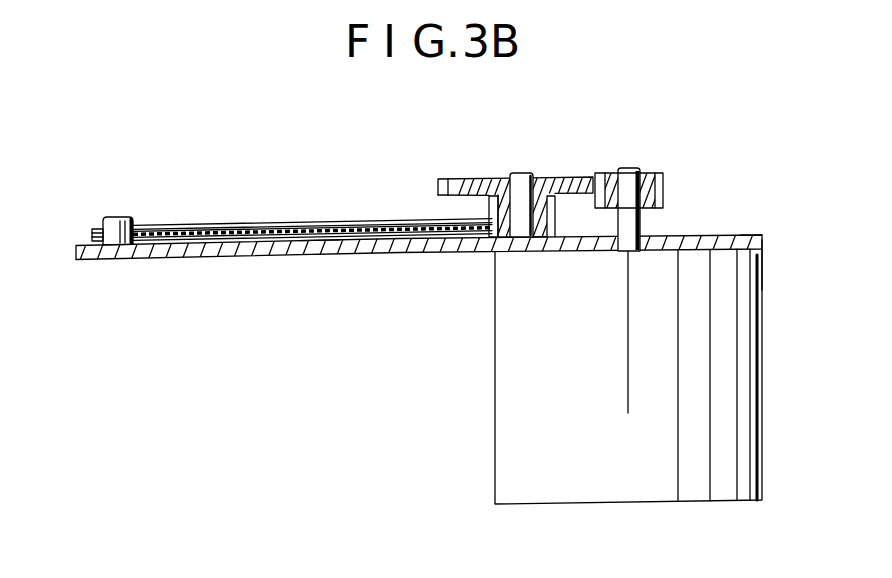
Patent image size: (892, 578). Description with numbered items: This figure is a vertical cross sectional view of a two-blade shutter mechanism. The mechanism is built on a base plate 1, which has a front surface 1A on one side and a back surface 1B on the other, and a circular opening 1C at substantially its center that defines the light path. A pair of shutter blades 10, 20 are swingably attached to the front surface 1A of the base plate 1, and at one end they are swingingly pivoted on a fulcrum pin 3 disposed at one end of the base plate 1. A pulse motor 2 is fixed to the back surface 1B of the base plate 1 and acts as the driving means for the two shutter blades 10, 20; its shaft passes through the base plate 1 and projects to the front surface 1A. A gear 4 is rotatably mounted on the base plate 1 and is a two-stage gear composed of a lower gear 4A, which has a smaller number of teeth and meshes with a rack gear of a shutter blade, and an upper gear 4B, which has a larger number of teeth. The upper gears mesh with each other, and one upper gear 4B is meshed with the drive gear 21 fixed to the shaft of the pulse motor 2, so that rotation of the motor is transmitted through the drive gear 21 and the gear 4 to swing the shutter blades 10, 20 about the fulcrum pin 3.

The base plate 1 is at (156, 257).
The front surface 1A is at (743, 272).
The back surface 1B is at (794, 292).
The circular opening 1C is at (329, 252).
The pulse motor 2 is at (765, 396).
The fulcrum pin 3 is at (117, 217).
The gear 4 is at (520, 177).
The lower gear 4A is at (489, 206).
The upper gear 4B is at (480, 190).
The shutter blade 10 is at (241, 225).
The shutter blade 20 is at (307, 226).
The drive gear 21 is at (665, 193).